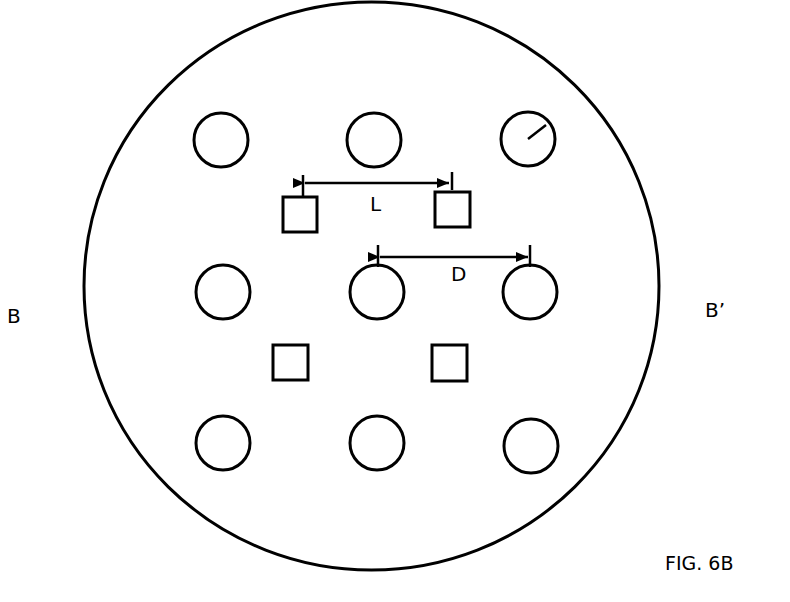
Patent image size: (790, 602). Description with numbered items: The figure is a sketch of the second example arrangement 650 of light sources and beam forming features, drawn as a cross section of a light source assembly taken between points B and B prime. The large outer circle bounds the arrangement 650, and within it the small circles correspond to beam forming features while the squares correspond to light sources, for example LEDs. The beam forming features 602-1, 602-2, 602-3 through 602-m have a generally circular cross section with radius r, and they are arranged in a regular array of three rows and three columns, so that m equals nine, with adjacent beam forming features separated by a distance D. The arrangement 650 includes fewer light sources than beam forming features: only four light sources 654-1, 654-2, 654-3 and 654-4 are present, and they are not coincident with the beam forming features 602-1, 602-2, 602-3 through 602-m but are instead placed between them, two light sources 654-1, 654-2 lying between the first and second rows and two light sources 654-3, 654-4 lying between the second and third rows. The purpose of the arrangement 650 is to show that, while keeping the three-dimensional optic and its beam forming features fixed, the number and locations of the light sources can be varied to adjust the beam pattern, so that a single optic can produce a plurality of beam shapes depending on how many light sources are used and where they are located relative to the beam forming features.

The second example arrangement 650 is at (82, 48).
The beam forming feature 602-1 is at (247, 129).
The beam forming feature 602-2 is at (409, 104).
The beam forming feature 602-3 is at (541, 114).
The beam forming feature 602-m is at (573, 418).
The light source 654-1 is at (500, 200).
The light source 654-2 is at (282, 217).
The light source 654-3 is at (453, 380).
The light source 654-4 is at (303, 362).